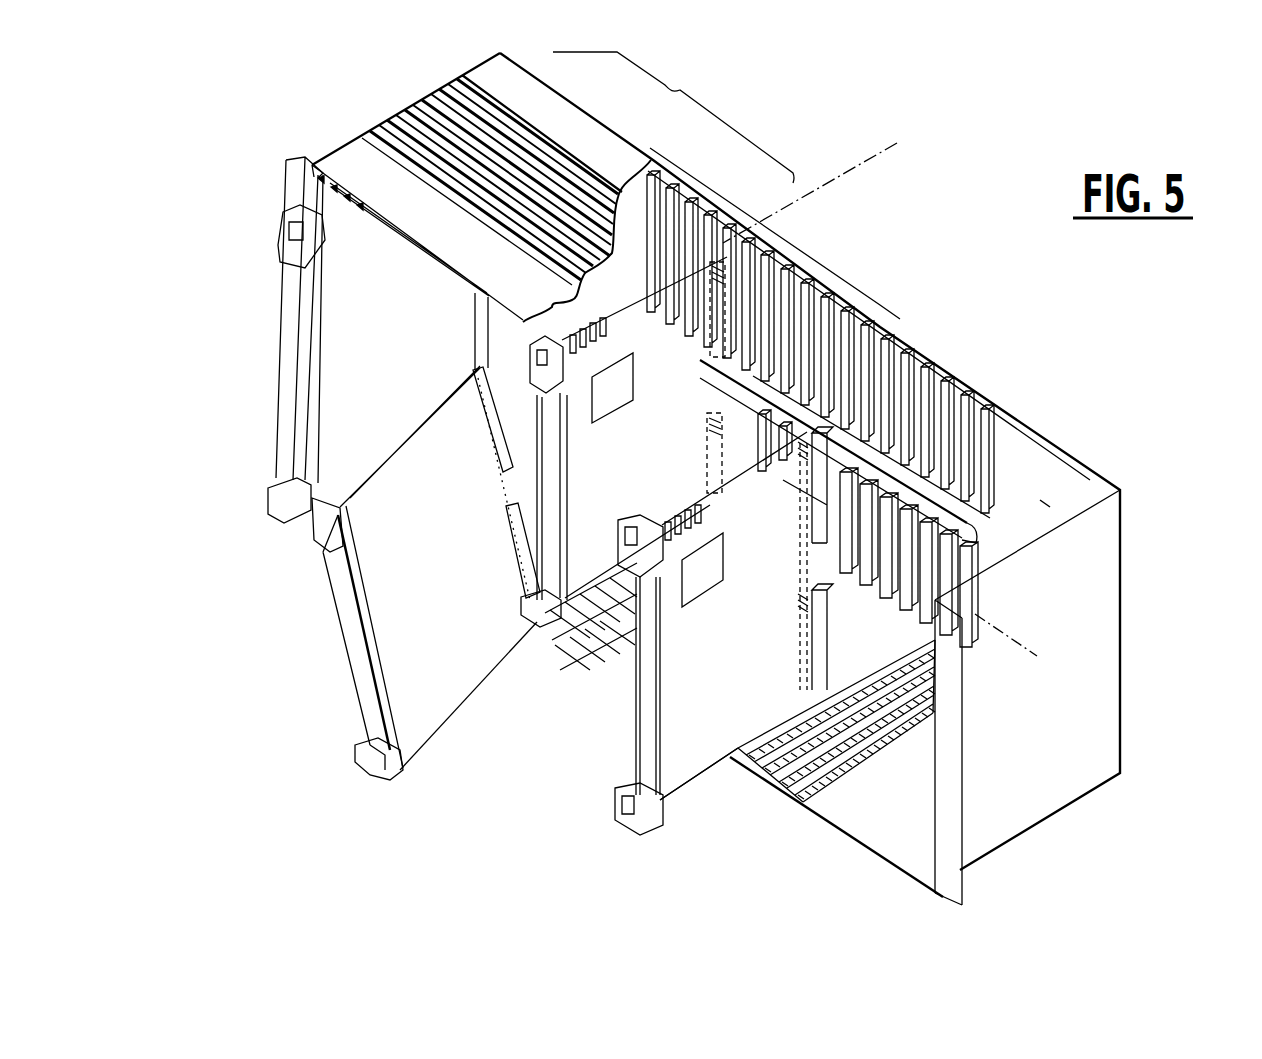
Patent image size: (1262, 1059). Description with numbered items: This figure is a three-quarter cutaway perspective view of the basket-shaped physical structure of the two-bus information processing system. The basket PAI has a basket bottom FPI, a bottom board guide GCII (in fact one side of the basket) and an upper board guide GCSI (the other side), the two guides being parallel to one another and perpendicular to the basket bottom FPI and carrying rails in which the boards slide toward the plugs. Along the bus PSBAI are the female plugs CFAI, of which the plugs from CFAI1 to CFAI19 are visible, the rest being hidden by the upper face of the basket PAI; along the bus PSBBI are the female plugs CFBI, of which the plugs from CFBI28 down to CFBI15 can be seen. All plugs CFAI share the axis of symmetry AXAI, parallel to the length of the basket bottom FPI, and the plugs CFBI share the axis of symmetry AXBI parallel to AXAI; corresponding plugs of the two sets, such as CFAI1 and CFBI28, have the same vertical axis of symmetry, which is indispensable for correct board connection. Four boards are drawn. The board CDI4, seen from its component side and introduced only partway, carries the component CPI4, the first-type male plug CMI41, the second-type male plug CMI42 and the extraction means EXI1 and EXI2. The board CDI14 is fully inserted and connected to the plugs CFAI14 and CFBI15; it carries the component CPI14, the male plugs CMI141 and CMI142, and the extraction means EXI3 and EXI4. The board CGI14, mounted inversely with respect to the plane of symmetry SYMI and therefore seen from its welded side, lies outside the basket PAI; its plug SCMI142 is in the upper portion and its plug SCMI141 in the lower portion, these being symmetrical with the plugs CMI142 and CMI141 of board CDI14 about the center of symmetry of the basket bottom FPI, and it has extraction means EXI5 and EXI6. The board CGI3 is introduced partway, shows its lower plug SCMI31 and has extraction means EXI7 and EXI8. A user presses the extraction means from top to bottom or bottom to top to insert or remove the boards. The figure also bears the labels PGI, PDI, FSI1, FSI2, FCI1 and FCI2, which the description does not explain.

The basket PAI is at (1145, 536).
The basket bottom FPI is at (1003, 453).
The axis of symmetry AXAI is at (990, 513).
The axis of symmetry AXBI is at (1005, 634).
The bus PSBAI is at (898, 338).
The female plugs CFAI is at (787, 237).
The female plug CFAI19 is at (653, 178).
The female plug CFAI14 is at (752, 241).
The female plug CFAI1 is at (1020, 412).
The bus PSBBI is at (920, 642).
The female plugs CFBI is at (705, 395).
The female plug CFBI15 is at (752, 418).
The female plug CFBI28 is at (968, 553).
The upper board guide GCSI is at (380, 122).
The guide plate PGI is at (673, 117).
The plane of symmetry SYMI is at (856, 167).
The rear plane PDI is at (966, 162).
The upper side flange FSI2 is at (365, 410).
The extraction means EXI7 is at (282, 256).
The extraction means EXI8 is at (272, 502).
The extraction means EXI5 is at (312, 545).
The board CGI3 is at (305, 450).
The lower side flange FSI1 is at (388, 622).
The extraction means EXI6 is at (355, 742).
The board CGI14 is at (420, 687).
The lower plug SCMI31 is at (473, 322).
The plug SCMI142 is at (478, 412).
The plug SCMI141 is at (517, 556).
The card frame 2 FCI2 is at (543, 471).
The extraction means EXI3 is at (530, 357).
The extraction means EXI4 is at (530, 613).
The board CDI14 is at (585, 605).
The male plug CMI141 is at (716, 313).
The component CPI14 is at (633, 396).
The male plug CMI142 is at (706, 440).
The extraction means EXI1 is at (622, 540).
The card frame 1 FCI1 is at (695, 738).
The male plug CMI41 is at (813, 505).
The male plug CMI42 is at (803, 640).
The component CPI4 is at (712, 582).
The extraction means EXI2 is at (632, 793).
The board CDI4 is at (665, 756).
The bottom board guide GCII is at (890, 778).